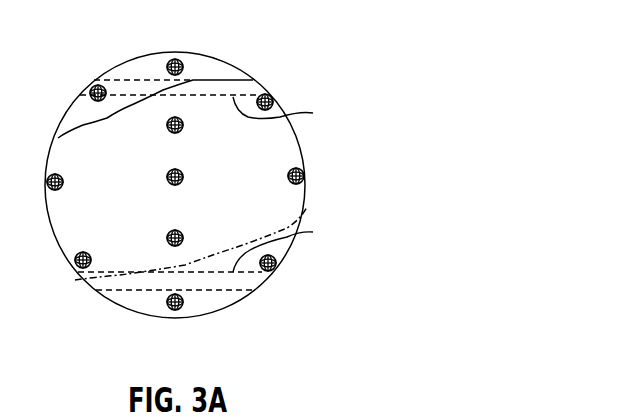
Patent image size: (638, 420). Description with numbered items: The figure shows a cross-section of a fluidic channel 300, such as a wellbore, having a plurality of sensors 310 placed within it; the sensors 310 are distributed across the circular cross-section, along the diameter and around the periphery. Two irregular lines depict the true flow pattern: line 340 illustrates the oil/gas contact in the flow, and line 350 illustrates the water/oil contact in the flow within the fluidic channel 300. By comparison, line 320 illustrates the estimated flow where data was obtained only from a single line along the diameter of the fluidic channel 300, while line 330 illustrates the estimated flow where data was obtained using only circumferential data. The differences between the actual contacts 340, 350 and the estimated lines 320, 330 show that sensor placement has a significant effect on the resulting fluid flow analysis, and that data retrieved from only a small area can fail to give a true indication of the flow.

The fluidic channel 300 is at (305, 44).
The sensors 310 is at (305, 176).
The line illustrating estimated flow from single-line data 320 is at (293, 184).
The line illustrating estimated flow from circumferential data 330 is at (142, 80).
The oil/gas contact line 340 is at (125, 107).
The water/oil contact line 350 is at (210, 262).